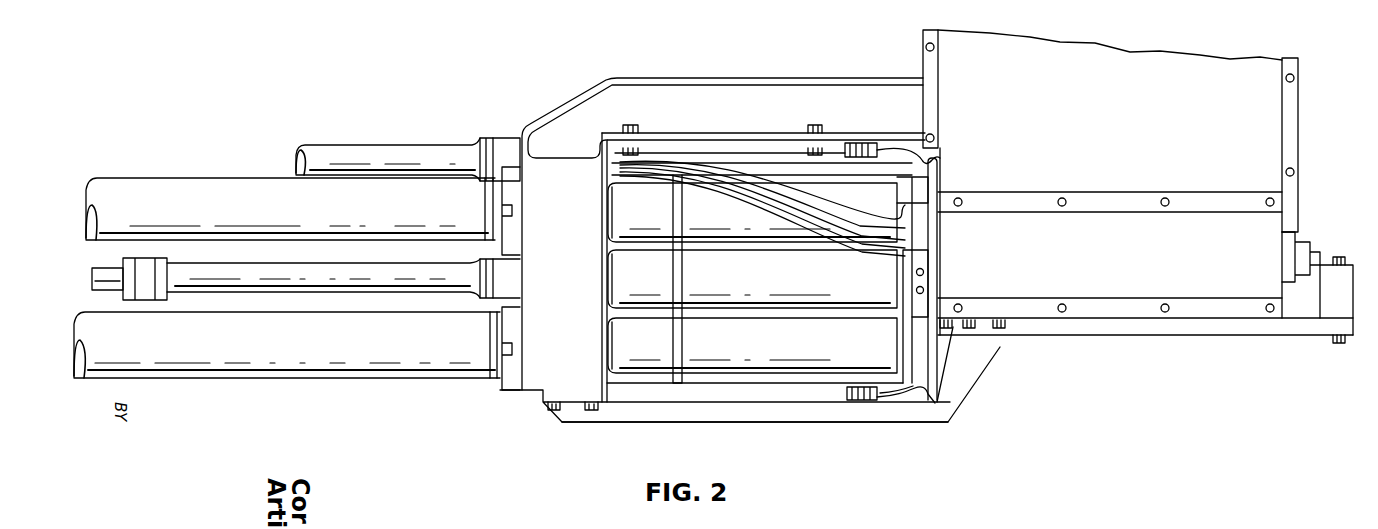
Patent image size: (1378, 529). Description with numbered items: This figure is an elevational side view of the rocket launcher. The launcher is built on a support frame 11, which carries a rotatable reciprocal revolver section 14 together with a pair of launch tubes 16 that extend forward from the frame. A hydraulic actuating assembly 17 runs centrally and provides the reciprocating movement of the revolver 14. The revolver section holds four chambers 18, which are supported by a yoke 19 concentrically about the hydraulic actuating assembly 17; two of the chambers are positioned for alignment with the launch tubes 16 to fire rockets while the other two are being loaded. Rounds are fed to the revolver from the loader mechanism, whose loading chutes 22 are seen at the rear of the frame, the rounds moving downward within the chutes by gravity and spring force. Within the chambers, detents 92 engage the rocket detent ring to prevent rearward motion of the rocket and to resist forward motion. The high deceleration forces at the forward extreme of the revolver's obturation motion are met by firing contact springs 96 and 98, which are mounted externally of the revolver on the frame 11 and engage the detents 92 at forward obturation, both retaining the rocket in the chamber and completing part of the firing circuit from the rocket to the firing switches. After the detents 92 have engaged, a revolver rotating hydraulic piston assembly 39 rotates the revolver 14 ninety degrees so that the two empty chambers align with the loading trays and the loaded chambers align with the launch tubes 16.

The support frame 11 is at (570, 388).
The rotatable reciprocal revolver section 14 is at (814, 391).
The launch tubes 16 is at (220, 186).
The hydraulic actuating assembly 17 is at (385, 297).
The chambers 18 is at (637, 355).
The yoke 19 is at (679, 383).
The loading chutes 22 is at (1221, 60).
The revolver rotating hydraulic piston assembly 39 is at (396, 152).
The detents 92 is at (940, 157).
The firing contact spring 96 is at (940, 165).
The firing contact spring 98 is at (908, 401).